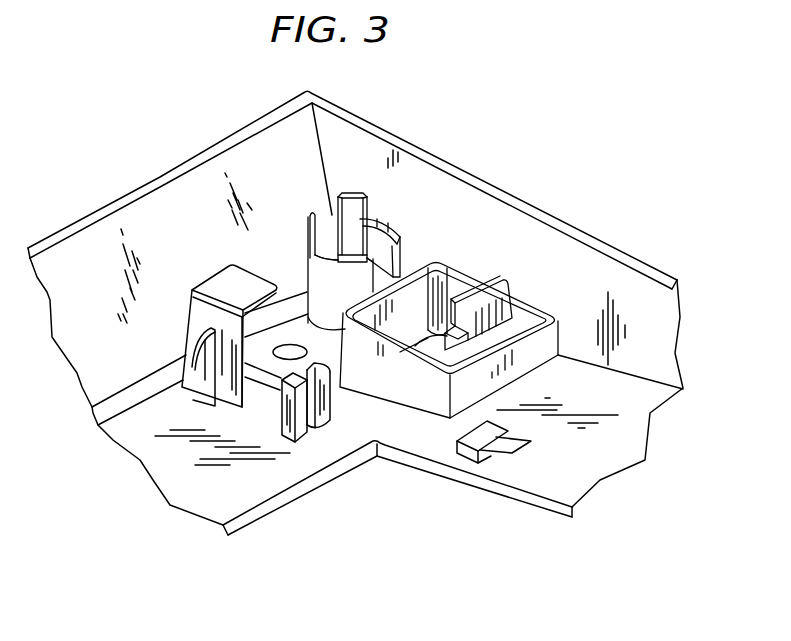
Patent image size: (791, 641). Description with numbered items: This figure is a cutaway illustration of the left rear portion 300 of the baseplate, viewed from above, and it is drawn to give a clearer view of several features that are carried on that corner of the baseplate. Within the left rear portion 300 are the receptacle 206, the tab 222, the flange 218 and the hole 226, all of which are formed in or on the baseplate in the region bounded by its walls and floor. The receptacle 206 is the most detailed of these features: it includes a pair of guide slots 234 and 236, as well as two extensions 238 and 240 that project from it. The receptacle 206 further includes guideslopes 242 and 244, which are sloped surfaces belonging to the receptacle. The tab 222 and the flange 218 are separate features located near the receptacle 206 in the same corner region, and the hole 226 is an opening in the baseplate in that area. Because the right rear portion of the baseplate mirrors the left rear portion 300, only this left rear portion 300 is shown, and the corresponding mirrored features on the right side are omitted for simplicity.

The left rear portion 300 is at (355, 313).
The receptacle 206 is at (401, 238).
The flange 218 is at (477, 295).
The tab 222 is at (497, 308).
The hole 226 is at (430, 346).
The guide slot 234 is at (320, 209).
The guide slot 236 is at (382, 276).
The extension 238 is at (308, 231).
The extension 240 is at (352, 193).
The guideslope 242 is at (373, 222).
The guideslope 244 is at (329, 257).